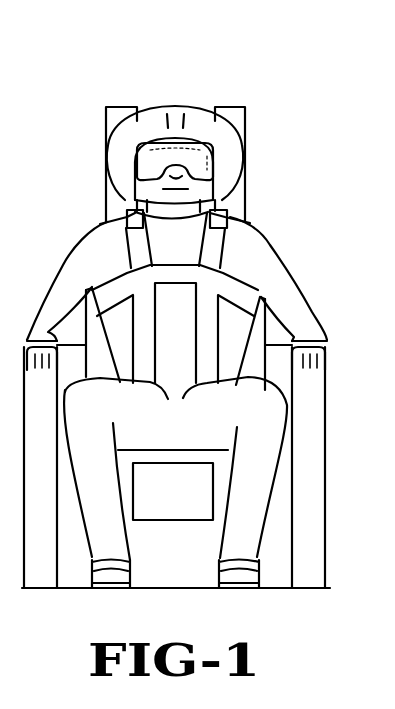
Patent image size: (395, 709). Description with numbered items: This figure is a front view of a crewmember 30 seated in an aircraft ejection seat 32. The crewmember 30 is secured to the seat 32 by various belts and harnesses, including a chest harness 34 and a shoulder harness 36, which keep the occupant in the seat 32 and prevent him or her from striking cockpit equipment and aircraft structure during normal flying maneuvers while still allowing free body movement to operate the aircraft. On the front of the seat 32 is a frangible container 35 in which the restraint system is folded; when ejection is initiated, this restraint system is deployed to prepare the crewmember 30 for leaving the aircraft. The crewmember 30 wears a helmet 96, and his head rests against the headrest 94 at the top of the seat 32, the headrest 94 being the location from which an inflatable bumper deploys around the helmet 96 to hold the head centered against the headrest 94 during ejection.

The crewmember 30 is at (267, 235).
The aircraft seat 32 is at (326, 433).
The chest harness 34 is at (254, 298).
The frangible container 35 is at (163, 520).
The shoulder harness 36 is at (232, 220).
The headrest 94 is at (233, 107).
The helmet 96 is at (168, 107).